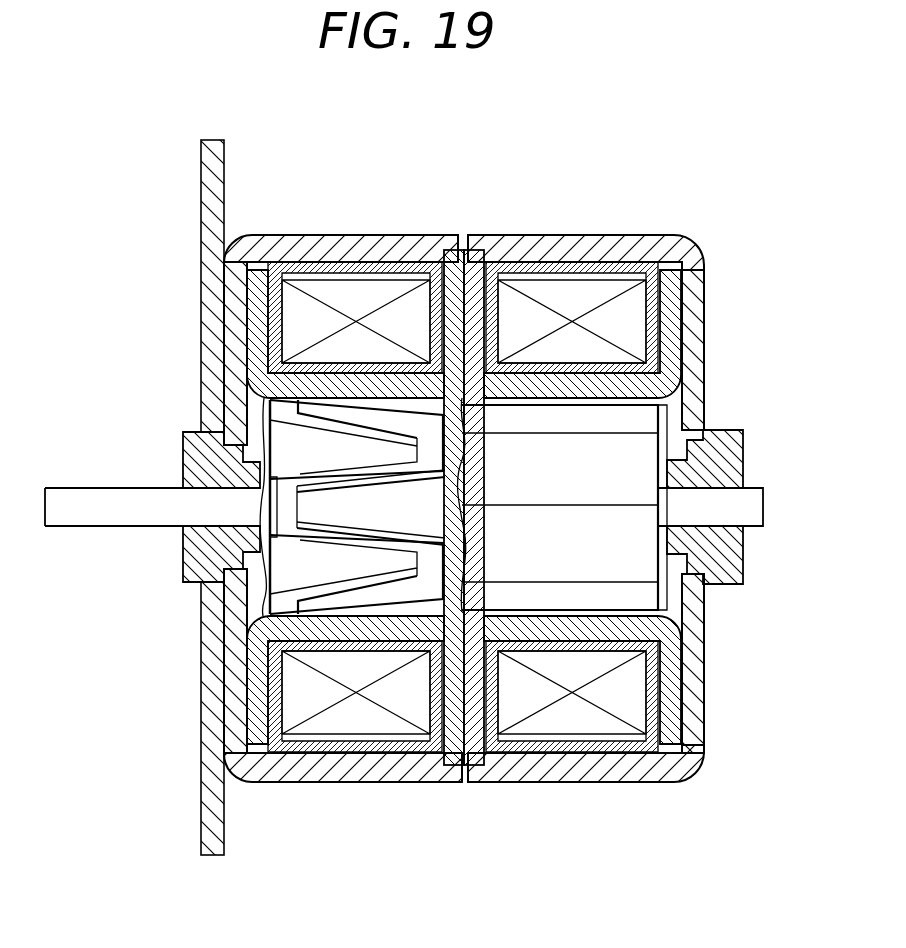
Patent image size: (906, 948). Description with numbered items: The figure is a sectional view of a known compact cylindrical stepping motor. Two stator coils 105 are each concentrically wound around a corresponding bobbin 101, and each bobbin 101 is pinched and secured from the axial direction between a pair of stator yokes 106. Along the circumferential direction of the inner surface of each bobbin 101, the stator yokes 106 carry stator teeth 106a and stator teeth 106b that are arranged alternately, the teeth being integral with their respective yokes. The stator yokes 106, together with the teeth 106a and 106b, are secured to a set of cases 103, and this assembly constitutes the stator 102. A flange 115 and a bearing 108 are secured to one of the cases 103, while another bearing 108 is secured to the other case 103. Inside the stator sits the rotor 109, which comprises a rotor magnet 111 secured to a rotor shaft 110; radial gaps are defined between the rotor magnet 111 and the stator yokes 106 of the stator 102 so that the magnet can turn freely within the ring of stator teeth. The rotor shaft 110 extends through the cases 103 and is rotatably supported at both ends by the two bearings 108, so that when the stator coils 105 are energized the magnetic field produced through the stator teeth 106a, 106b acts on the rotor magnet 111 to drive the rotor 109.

The bobbin 101 is at (447, 240).
The stator 102 is at (478, 133).
The case 103 is at (232, 240).
The stator coil 105 is at (377, 287).
The stator yoke 106 is at (258, 264).
The stator tooth 106a is at (275, 577).
The stator tooth 106b is at (308, 505).
The bearing 108 is at (183, 432).
The rotor 109 is at (667, 418).
The rotor shaft 110 is at (122, 497).
The rotor magnet 111 is at (643, 568).
The flange 115 is at (207, 172).